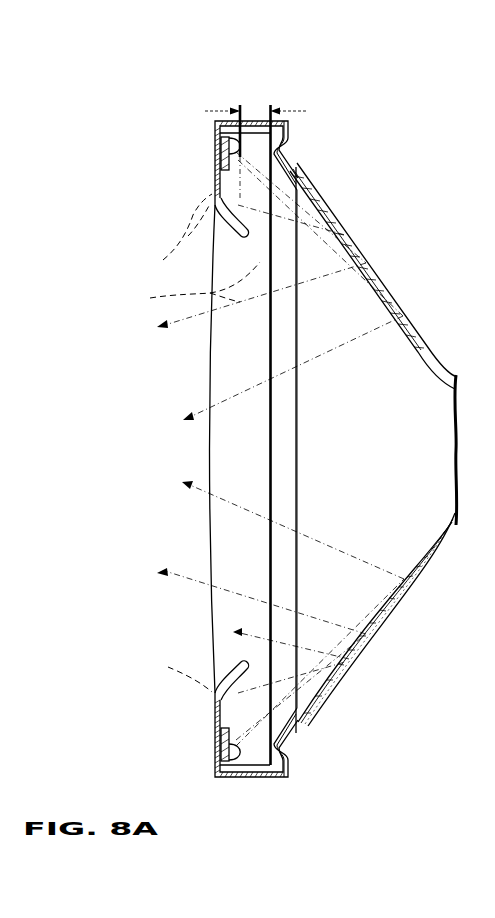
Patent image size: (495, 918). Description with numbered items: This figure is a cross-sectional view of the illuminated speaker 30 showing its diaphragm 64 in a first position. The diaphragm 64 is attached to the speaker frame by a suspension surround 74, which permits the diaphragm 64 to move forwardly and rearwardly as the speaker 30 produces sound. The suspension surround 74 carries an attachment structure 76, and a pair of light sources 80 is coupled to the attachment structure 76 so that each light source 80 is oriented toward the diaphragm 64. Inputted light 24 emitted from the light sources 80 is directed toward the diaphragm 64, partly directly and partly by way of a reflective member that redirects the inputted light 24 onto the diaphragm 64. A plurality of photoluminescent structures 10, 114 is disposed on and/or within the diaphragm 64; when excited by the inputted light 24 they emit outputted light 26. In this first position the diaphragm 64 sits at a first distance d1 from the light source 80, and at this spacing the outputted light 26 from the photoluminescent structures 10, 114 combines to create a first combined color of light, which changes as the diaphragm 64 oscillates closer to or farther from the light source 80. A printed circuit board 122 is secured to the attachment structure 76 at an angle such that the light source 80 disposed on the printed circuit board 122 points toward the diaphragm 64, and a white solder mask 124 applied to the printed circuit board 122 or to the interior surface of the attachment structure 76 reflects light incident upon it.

The photoluminescent structure 10 is at (321, 204).
The inputted light 24 is at (175, 253).
The outputted light 26 is at (191, 449).
The speaker 30 is at (374, 207).
The diaphragm 64 is at (362, 641).
The suspension surround 74 is at (276, 152).
The attachment structure 76 is at (214, 143).
The light source 80 is at (229, 158).
The photoluminescent structure 114 is at (373, 277).
The printed circuit board 122 is at (221, 151).
The white solder mask 124 is at (252, 133).
The first distance d1 is at (247, 111).